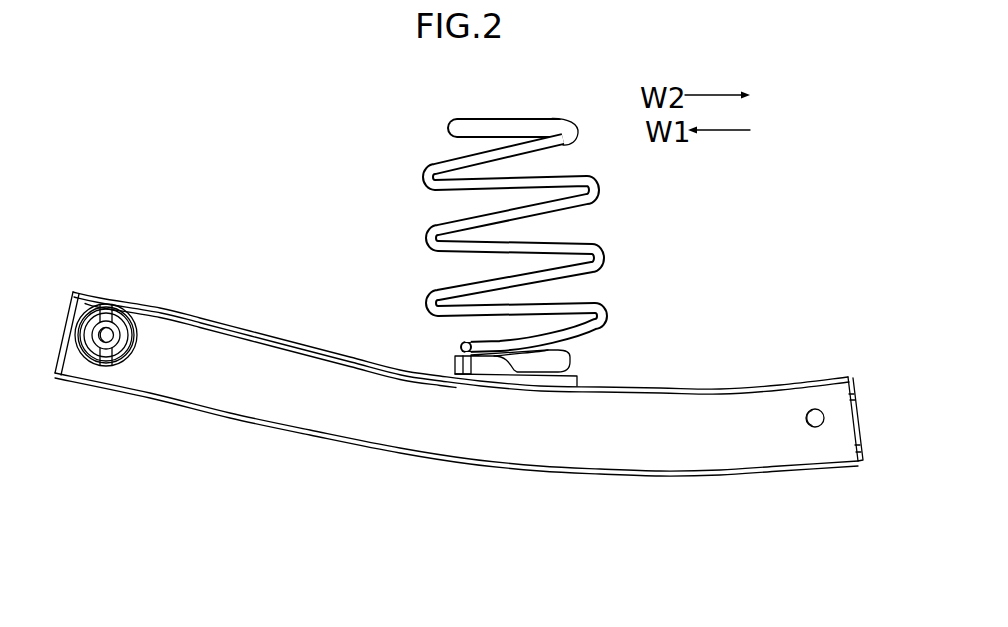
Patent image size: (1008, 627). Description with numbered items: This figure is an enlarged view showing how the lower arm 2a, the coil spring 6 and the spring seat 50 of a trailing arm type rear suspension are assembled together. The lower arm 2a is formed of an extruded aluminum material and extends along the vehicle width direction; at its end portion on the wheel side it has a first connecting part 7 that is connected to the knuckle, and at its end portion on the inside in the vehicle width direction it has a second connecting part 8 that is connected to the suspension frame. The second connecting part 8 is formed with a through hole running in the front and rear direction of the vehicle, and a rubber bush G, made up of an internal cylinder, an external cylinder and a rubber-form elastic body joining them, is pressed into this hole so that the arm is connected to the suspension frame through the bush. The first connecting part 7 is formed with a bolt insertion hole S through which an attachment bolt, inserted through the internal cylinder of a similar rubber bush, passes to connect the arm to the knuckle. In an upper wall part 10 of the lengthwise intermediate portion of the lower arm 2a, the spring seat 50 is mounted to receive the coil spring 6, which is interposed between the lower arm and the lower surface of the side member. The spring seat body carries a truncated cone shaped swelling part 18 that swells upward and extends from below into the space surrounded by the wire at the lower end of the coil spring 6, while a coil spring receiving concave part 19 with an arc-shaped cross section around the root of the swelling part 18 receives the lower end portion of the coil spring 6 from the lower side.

The lower arm 2a is at (522, 461).
The coil spring 6 is at (437, 152).
The first connecting part 7 is at (758, 456).
The second connecting part 8 is at (142, 376).
The upper wall part 10 is at (432, 372).
The swelling part 18 is at (557, 355).
The coil spring receiving concave part 19 is at (571, 370).
The spring seat 50 is at (456, 358).
The rubber bush G is at (100, 361).
The bolt insertion hole S is at (809, 410).